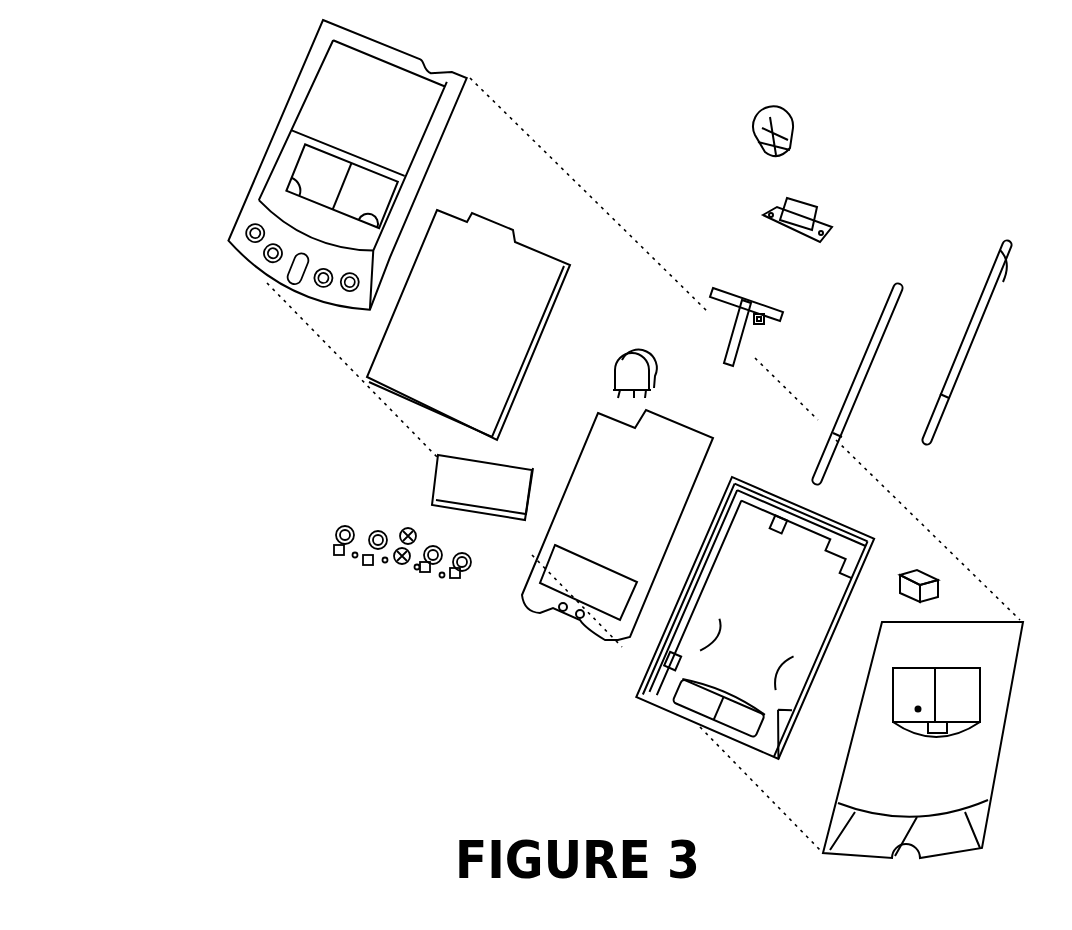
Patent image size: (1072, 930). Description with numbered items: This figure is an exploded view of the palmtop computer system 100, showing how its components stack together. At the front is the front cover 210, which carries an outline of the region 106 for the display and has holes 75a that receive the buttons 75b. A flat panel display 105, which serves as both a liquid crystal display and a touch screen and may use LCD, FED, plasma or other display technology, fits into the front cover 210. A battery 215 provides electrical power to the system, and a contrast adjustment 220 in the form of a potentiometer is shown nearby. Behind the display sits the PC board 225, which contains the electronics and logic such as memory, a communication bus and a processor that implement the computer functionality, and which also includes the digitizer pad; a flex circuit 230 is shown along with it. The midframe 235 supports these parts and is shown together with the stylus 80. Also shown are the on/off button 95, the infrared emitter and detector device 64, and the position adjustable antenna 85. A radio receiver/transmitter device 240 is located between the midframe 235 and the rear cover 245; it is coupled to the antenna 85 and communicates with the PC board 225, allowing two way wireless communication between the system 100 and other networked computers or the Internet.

The palmtop computer system 100 is at (80, 61).
The front cover 210 is at (396, 124).
The region 106 is at (304, 169).
The holes 75a is at (244, 226).
The flat panel display 105 is at (491, 338).
The battery 215 is at (505, 498).
The buttons 75b is at (346, 526).
The contrast adjustment 220 is at (629, 352).
The PC board 225 is at (650, 515).
The midframe 235 is at (790, 613).
The radio receiver/transmitter device 240 is at (910, 572).
The rear cover 245 is at (945, 788).
The on/off button 95 is at (792, 122).
The infrared emitter and detector device 64 is at (808, 203).
The flex circuit 230 is at (763, 301).
The position adjustable antenna 85 is at (883, 352).
The stylus 80 is at (983, 327).